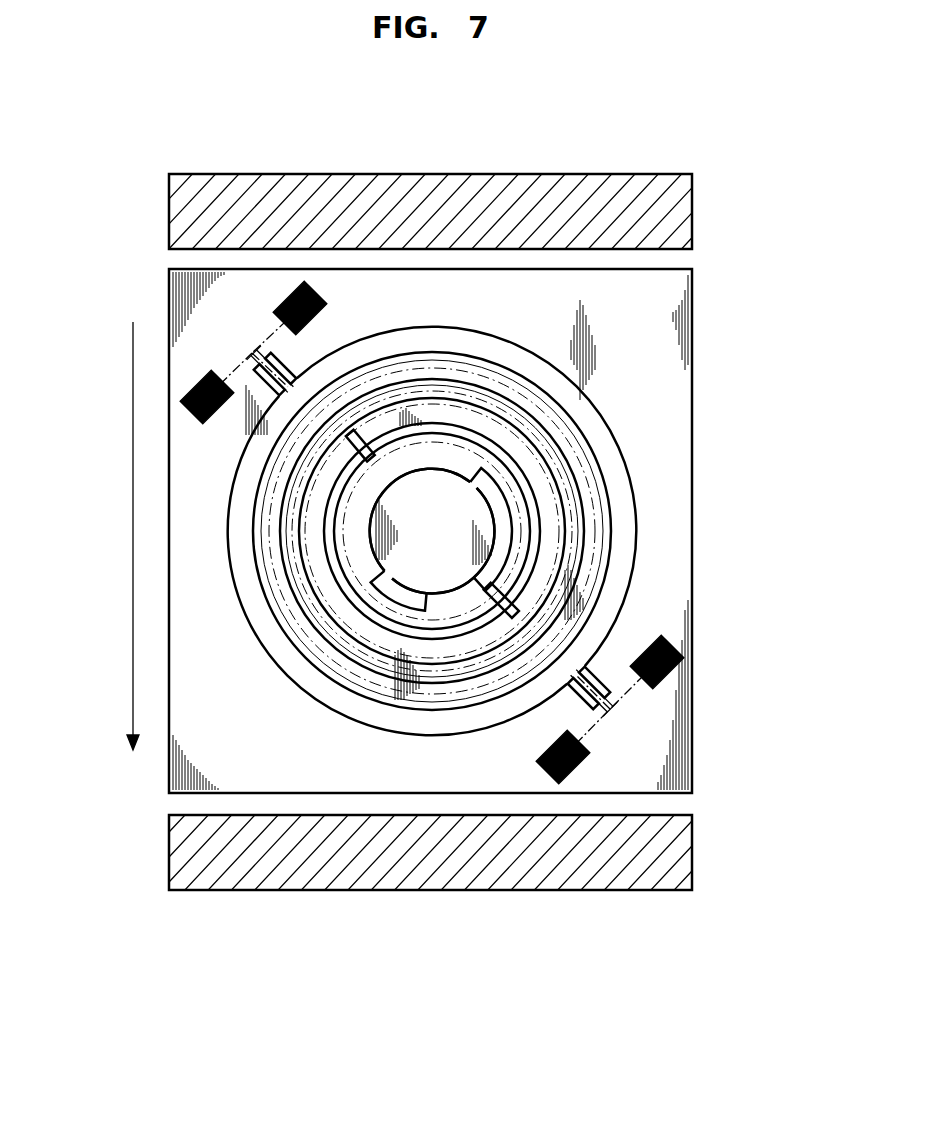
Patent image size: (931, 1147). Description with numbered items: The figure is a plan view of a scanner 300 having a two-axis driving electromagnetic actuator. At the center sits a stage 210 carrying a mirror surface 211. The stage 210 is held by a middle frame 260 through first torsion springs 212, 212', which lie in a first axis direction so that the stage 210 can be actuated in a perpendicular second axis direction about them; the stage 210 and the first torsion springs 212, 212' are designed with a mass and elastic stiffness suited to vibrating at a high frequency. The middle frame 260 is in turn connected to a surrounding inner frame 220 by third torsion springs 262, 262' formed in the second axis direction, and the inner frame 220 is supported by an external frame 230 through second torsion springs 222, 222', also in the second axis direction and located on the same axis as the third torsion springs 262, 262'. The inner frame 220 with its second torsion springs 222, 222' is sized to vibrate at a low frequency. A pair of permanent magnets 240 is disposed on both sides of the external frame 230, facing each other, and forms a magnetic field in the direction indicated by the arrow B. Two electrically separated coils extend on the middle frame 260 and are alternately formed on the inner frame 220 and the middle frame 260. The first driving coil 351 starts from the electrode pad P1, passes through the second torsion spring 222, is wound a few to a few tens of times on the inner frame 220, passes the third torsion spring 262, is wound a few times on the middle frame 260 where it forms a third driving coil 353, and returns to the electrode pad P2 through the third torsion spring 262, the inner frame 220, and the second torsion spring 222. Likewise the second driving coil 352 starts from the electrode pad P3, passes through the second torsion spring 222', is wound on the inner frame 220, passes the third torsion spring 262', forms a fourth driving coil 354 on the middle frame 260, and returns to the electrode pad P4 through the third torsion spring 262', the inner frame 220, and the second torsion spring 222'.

The scanner 300 is at (123, 154).
The permanent magnets 240 is at (690, 200).
The external frame 230 is at (680, 352).
The inner frame 220 is at (598, 435).
The second torsion spring 222 is at (306, 349).
The second torsion spring 222' is at (668, 651).
The middle frame 260 is at (522, 471).
The third torsion spring 262 is at (388, 374).
The third torsion spring 262' is at (626, 579).
The stage 210 is at (432, 531).
The mirror surface 211 is at (478, 534).
The first torsion spring 212 is at (616, 529).
The first torsion spring 212' is at (239, 593).
The first driving coil 351 is at (520, 383).
The second driving coil 352 is at (476, 370).
The third driving coil 353 is at (415, 618).
The fourth driving coil 354 is at (455, 627).
The electrode pad P1 is at (282, 302).
The electrode pad P2 is at (190, 388).
The electrode pad P3 is at (684, 660).
The electrode pad P4 is at (582, 760).